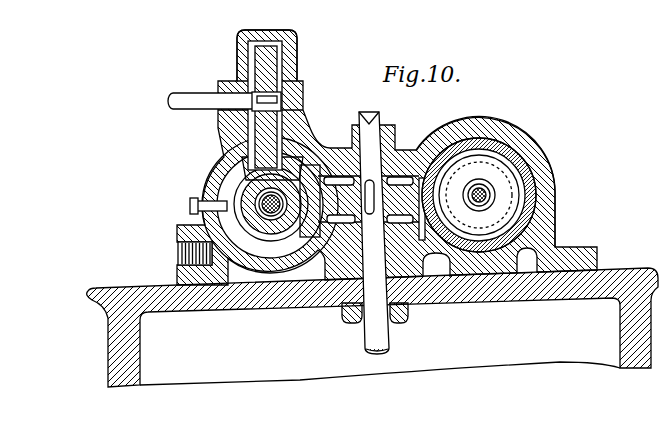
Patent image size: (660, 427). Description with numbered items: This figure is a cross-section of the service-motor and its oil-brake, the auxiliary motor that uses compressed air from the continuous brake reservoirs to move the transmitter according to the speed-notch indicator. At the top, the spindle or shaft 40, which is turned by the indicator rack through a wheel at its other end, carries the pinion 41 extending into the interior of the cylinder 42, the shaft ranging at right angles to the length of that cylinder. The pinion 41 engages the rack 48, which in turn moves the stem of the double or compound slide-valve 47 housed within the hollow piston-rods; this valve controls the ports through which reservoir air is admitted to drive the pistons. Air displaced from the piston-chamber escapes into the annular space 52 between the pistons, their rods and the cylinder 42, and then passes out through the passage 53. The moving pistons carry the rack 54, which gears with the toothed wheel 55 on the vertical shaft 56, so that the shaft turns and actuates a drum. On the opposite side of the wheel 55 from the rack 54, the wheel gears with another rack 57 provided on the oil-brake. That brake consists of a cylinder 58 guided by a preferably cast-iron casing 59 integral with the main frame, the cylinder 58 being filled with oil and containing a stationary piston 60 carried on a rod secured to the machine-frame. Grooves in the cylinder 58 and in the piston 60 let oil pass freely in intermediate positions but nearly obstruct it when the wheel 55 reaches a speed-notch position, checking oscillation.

The spindle or shaft 40 is at (196, 103).
The pinion 41 is at (278, 48).
The cylinder 42 is at (218, 181).
The double or compound slide-valve 47 is at (212, 204).
The rack 48 is at (281, 122).
The annular space 52 is at (263, 250).
The passage 53 is at (178, 246).
The rack 54 is at (277, 199).
The toothed wheel 55 is at (368, 199).
The vertical shaft 56 is at (374, 233).
The rack 57 is at (414, 178).
The cylinder 58 is at (523, 160).
The casing 59 is at (452, 132).
The stationary piston 60 is at (508, 194).